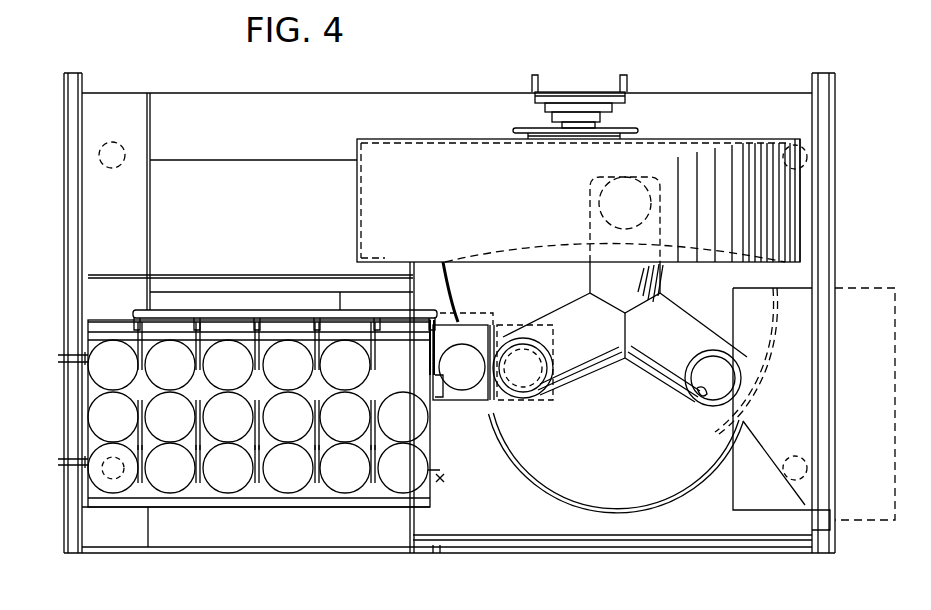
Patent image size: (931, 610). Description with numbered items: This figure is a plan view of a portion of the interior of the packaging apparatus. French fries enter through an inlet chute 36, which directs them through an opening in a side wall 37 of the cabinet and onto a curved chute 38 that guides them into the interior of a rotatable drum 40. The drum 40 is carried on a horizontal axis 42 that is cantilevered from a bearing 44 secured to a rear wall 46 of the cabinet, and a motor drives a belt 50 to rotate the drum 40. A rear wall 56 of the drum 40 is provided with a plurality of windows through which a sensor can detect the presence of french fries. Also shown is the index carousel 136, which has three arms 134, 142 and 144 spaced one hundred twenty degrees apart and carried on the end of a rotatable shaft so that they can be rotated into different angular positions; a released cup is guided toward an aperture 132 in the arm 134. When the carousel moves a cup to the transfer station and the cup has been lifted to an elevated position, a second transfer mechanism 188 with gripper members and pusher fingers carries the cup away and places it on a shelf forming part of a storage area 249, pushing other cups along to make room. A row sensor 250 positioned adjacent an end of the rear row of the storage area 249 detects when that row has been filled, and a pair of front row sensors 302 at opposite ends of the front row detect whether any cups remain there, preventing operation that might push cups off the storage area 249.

The inlet chute 36 is at (858, 300).
The side wall 37 is at (835, 185).
The curved chute 38 is at (578, 490).
The rotatable drum 40 is at (378, 157).
The horizontal axis 42 is at (590, 125).
The bearing 44 is at (545, 110).
The rear wall 46 is at (727, 93).
The belt 50 is at (640, 130).
The rear wall of the drum 56 is at (765, 140).
The aperture 132 is at (695, 400).
The arm 134 is at (657, 365).
The index carousel 136 is at (670, 297).
The arm 142 is at (599, 276).
The arm 144 is at (580, 372).
The transfer mechanism 188 is at (455, 426).
The storage area 249 is at (137, 481).
The row sensor 250 is at (88, 355).
The front row sensors 302 is at (85, 500).